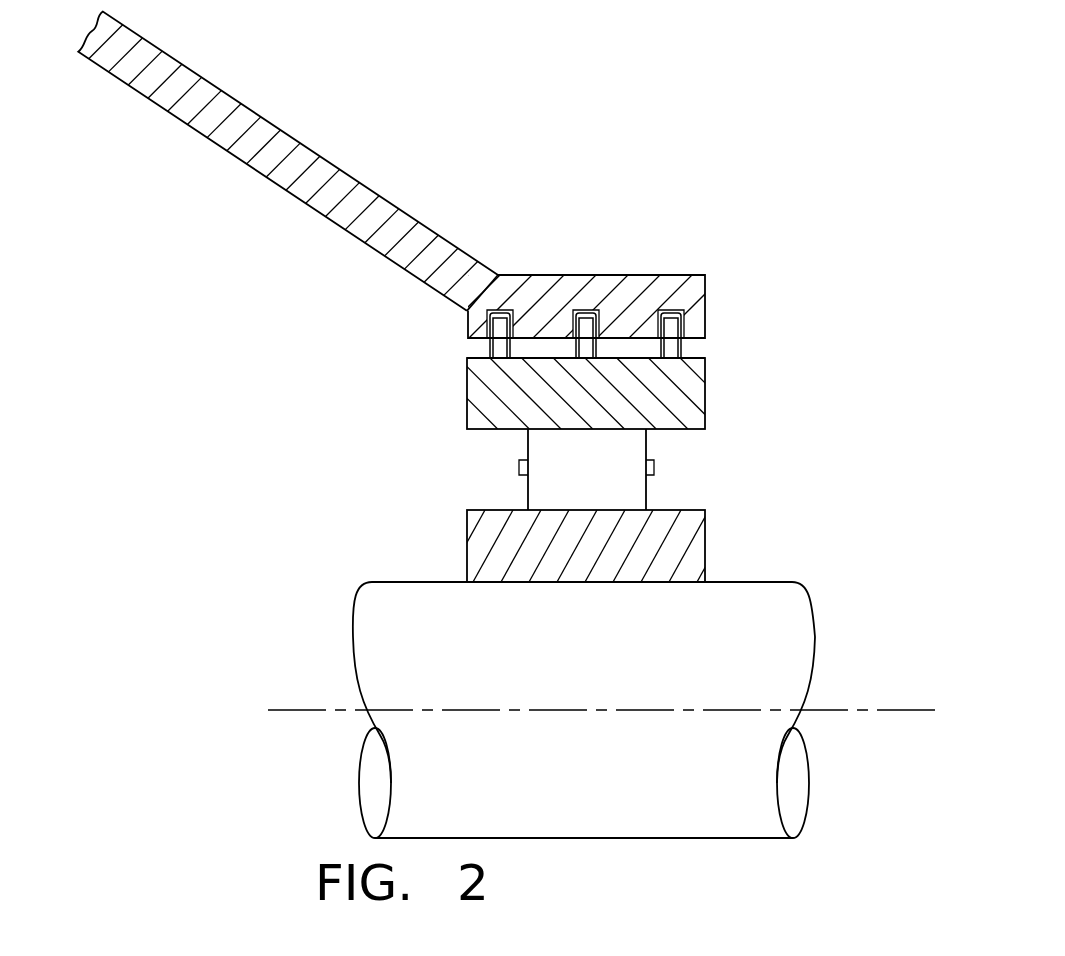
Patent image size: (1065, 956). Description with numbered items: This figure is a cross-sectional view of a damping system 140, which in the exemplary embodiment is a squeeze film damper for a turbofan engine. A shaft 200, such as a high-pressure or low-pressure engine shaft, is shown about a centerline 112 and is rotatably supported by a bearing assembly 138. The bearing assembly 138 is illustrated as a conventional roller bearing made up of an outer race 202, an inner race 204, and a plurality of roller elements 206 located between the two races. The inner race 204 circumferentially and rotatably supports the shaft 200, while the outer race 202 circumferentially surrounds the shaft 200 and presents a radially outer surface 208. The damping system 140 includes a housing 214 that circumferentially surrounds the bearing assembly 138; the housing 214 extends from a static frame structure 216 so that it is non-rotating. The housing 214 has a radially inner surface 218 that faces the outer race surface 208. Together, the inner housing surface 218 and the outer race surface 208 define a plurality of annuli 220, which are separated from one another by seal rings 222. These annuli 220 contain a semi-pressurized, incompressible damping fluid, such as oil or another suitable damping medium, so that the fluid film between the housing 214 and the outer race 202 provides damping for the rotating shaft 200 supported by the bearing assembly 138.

The rotor axis 112 is at (915, 710).
The bearing assembly 138 is at (762, 502).
The damping system 140 is at (735, 158).
The shaft 200 is at (815, 620).
The outer race 202 is at (706, 390).
The inner race 204 is at (705, 542).
The roller elements 206 is at (647, 492).
The radially outer surface 208 is at (700, 358).
The housing 214 is at (675, 275).
The static frame structure 216 is at (173, 55).
The radially inner surface 218 is at (468, 338).
The annuli 220 is at (543, 356).
The seal rings 222 is at (681, 313).